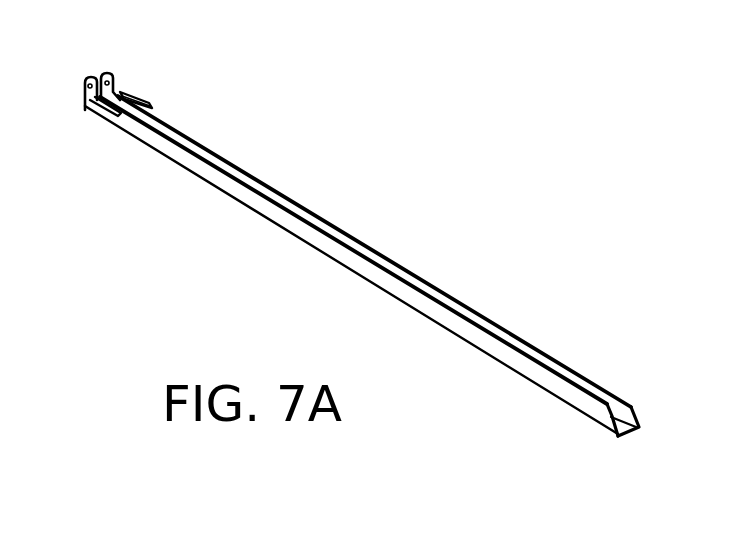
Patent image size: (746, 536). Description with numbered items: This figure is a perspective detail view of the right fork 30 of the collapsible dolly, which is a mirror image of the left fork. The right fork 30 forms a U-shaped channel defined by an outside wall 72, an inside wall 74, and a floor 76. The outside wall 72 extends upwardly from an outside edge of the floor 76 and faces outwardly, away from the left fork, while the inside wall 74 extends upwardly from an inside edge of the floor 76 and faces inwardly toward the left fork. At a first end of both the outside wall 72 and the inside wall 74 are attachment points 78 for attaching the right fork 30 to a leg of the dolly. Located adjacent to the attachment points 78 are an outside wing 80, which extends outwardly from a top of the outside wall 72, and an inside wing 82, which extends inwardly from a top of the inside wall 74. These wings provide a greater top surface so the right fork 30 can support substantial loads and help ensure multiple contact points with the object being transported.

The right fork 30 is at (345, 261).
The outside wall 72 is at (228, 160).
The inside wall 74 is at (218, 170).
The floor 76 is at (641, 427).
The attachment points 78 is at (85, 80).
The outside wing 80 is at (145, 100).
The inside wing 82 is at (92, 105).